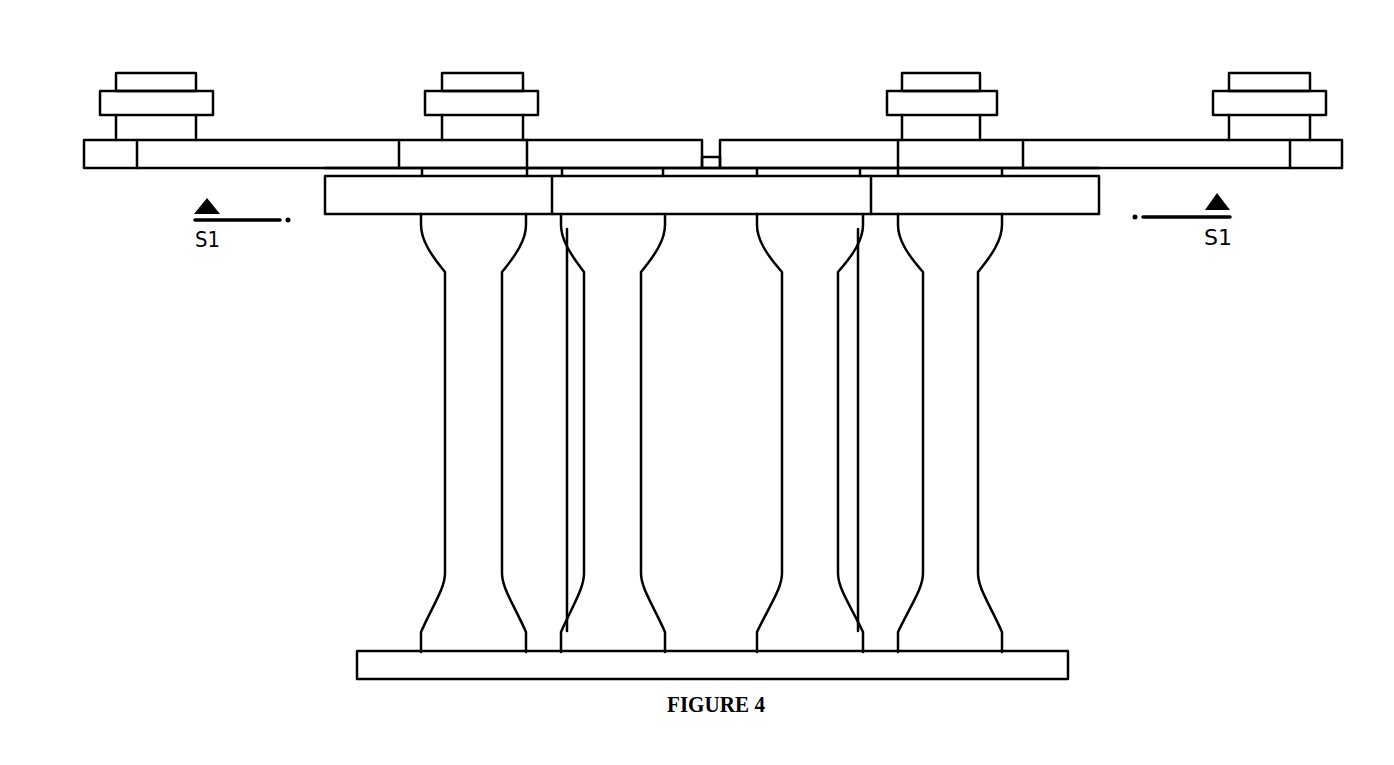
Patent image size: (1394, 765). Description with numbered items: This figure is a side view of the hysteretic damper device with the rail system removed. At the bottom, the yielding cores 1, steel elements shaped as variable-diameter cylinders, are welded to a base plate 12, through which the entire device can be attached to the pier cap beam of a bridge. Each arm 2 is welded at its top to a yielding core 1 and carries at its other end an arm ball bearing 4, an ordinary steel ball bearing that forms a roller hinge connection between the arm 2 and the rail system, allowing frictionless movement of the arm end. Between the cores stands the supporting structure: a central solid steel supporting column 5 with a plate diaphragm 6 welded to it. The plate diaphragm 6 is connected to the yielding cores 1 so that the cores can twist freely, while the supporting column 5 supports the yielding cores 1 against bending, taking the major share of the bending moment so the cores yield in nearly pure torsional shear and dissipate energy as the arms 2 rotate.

The yielding core 1 is at (711, 433).
The arm 2 is at (713, 154).
The arm ball bearing 4 is at (225, 91).
The supporting column 5 is at (712, 430).
The plate diaphragm 6 is at (712, 191).
The base plate 12 is at (1086, 666).